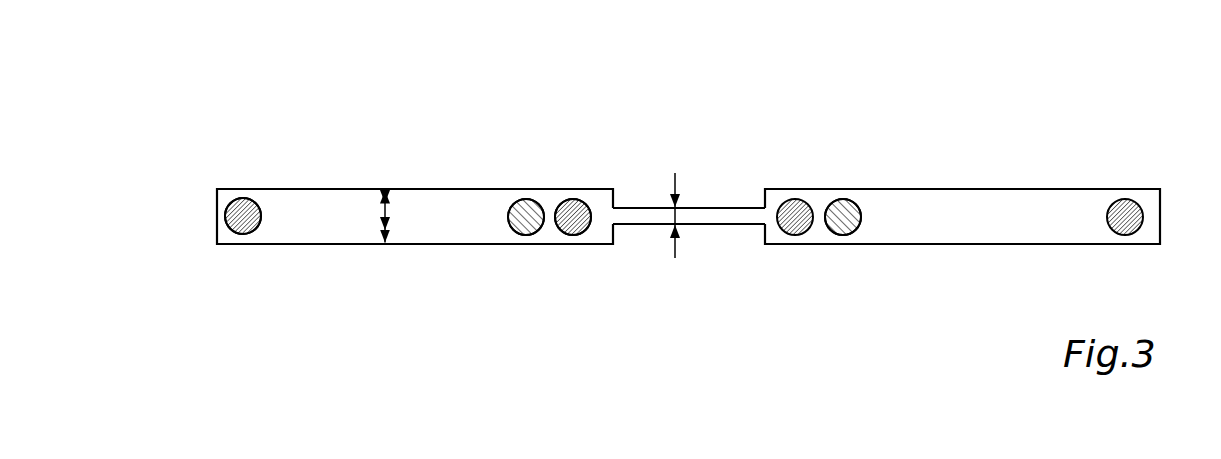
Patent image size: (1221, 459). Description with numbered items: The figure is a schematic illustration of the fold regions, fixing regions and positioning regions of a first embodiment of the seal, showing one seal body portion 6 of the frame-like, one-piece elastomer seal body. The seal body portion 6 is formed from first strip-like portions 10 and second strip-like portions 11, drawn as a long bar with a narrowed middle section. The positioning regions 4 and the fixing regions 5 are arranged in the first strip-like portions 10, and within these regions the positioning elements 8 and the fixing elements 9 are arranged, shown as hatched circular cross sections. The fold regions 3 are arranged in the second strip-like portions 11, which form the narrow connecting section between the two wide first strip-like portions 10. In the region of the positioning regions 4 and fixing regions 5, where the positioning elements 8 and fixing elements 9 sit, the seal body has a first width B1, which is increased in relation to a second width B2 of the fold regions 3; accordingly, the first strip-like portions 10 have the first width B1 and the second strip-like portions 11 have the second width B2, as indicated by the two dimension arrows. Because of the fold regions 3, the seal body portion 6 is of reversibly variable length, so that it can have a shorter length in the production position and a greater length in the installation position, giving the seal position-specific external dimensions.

The fold region 3 is at (684, 222).
The positioning region 4 is at (221, 190).
The fixing region 5 is at (520, 194).
The seal body portion 6 is at (688, 175).
The positioning element 8 is at (241, 202).
The fixing element 9 is at (527, 230).
The first strip-like portion 10 is at (320, 189).
The second strip-like portion 11 is at (655, 207).
The first width B1 is at (387, 216).
The second width B2 is at (677, 215).